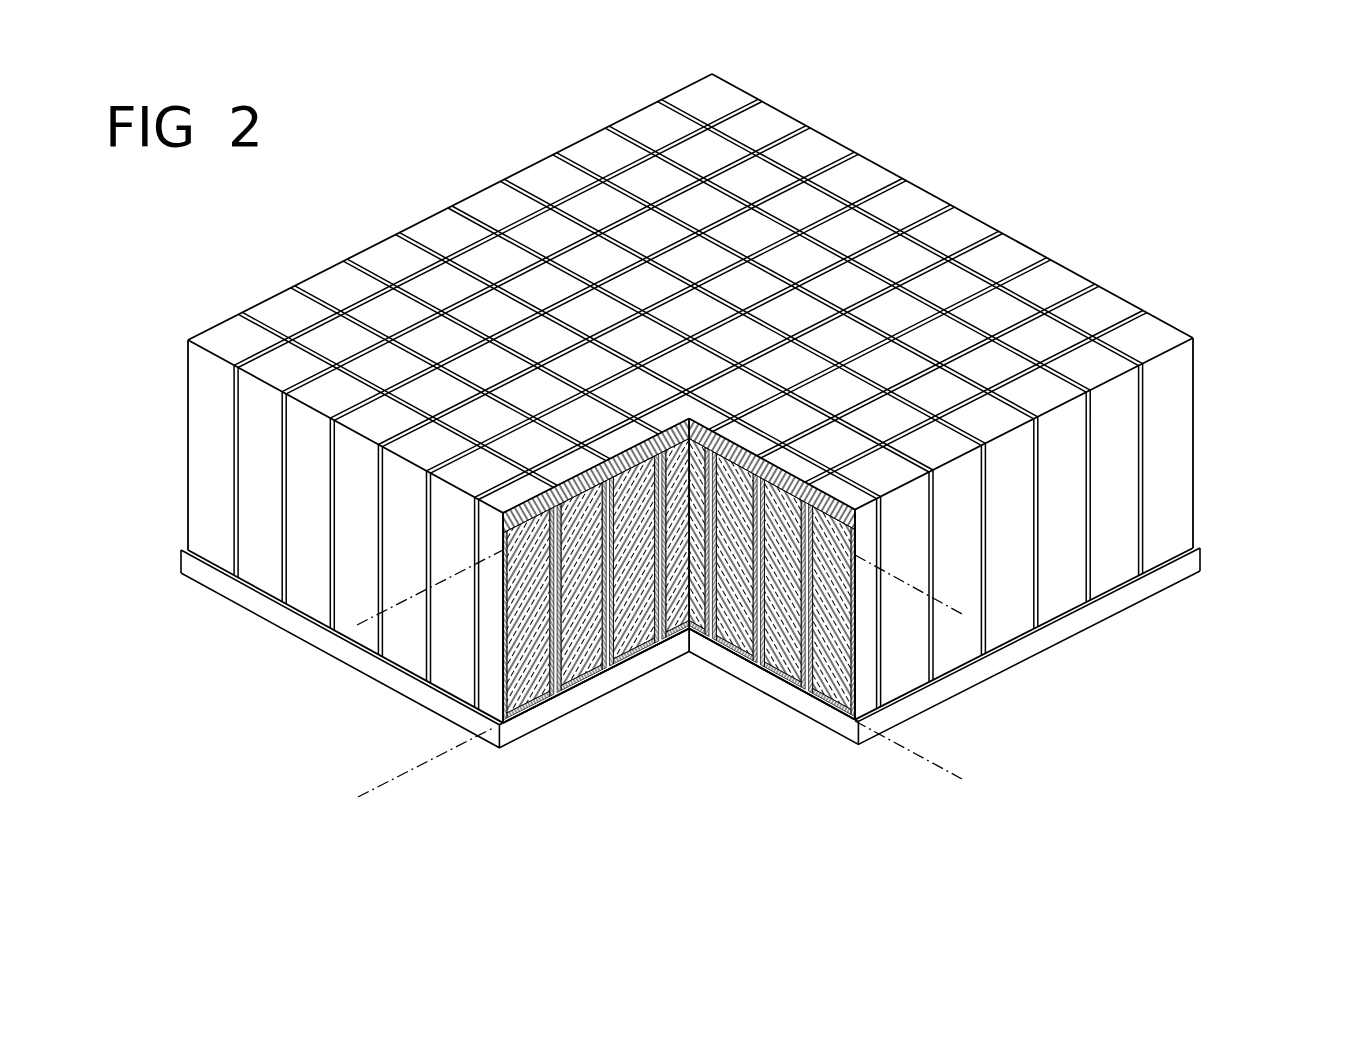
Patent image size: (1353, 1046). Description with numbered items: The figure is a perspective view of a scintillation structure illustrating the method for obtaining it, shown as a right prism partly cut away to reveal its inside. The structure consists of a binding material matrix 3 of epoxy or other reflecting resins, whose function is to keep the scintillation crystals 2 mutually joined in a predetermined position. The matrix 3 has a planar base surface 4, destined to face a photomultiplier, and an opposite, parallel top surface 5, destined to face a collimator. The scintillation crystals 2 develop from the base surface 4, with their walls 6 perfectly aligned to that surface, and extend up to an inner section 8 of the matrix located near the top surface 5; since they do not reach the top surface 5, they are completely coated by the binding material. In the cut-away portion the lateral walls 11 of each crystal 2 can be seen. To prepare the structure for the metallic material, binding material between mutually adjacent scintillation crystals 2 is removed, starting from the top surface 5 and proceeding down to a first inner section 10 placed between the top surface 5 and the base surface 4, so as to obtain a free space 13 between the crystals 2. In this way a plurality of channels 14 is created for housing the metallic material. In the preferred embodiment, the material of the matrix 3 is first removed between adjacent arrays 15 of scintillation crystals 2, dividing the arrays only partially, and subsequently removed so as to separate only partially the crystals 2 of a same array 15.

The scintillation crystals 2 is at (528, 698).
The binding material matrix 3 is at (1198, 354).
The base surface 4 is at (380, 690).
The top surface 5 is at (765, 118).
The walls 6 is at (583, 710).
The inner section 8 is at (952, 612).
The first inner section 10 is at (937, 777).
The lateral walls 11 is at (503, 632).
The free space 13 is at (333, 583).
The channels 14 is at (462, 297).
The arrays 15 is at (598, 652).